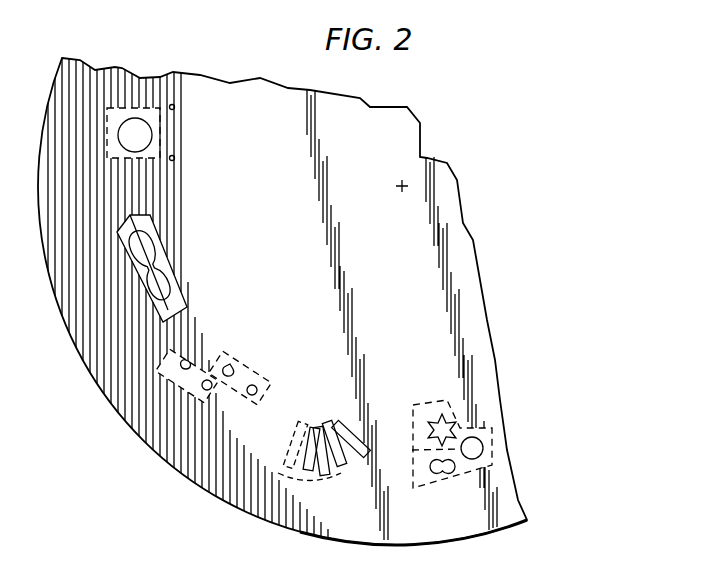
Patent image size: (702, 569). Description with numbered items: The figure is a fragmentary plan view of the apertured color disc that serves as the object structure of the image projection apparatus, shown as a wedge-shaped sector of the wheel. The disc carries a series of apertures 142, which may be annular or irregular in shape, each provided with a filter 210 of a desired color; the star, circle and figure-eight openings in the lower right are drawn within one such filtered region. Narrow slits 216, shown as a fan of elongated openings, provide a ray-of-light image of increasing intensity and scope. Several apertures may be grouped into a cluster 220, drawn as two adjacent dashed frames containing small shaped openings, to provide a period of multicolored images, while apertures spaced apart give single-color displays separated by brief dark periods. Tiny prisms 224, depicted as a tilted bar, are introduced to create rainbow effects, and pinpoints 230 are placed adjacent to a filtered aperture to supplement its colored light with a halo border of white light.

The pinpoints 230 is at (160, 133).
The prisms 224 is at (187, 300).
The cluster 220 is at (247, 367).
The narrow slits 216 is at (332, 422).
The apertures 142 is at (470, 437).
The filter 210 is at (418, 488).